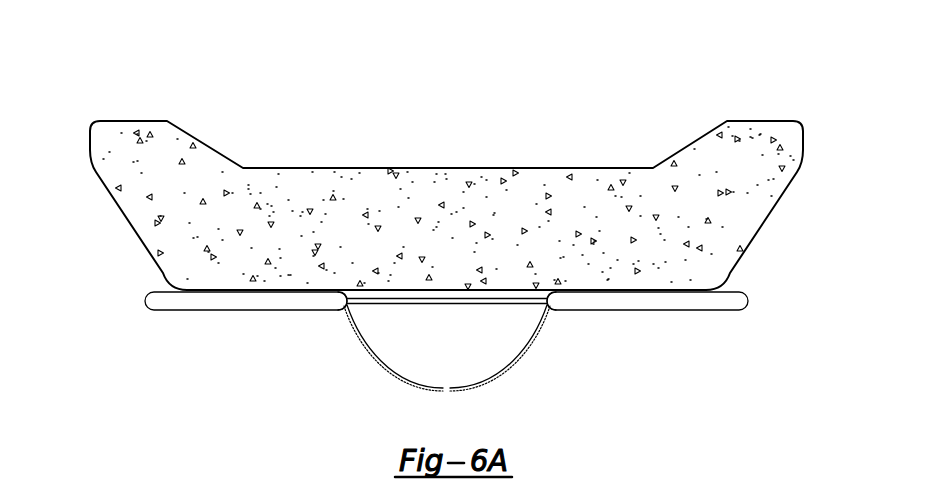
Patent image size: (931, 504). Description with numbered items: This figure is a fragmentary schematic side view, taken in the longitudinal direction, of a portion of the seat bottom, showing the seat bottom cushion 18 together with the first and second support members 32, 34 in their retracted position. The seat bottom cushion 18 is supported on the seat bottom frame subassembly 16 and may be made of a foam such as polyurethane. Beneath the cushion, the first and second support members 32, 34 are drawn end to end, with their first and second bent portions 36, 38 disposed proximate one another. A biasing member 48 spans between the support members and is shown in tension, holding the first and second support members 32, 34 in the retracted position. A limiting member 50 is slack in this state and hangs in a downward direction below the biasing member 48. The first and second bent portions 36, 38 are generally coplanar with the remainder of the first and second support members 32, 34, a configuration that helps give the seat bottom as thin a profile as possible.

The seat bottom frame subassembly 16 is at (181, 48).
The seat bottom cushion 18 is at (212, 147).
The first support member 32 is at (141, 302).
The second support member 34 is at (754, 300).
The first bent portion 36 is at (342, 302).
The second bent portion 38 is at (552, 302).
The biasing member 48 is at (462, 303).
The limiting member 50 is at (443, 386).